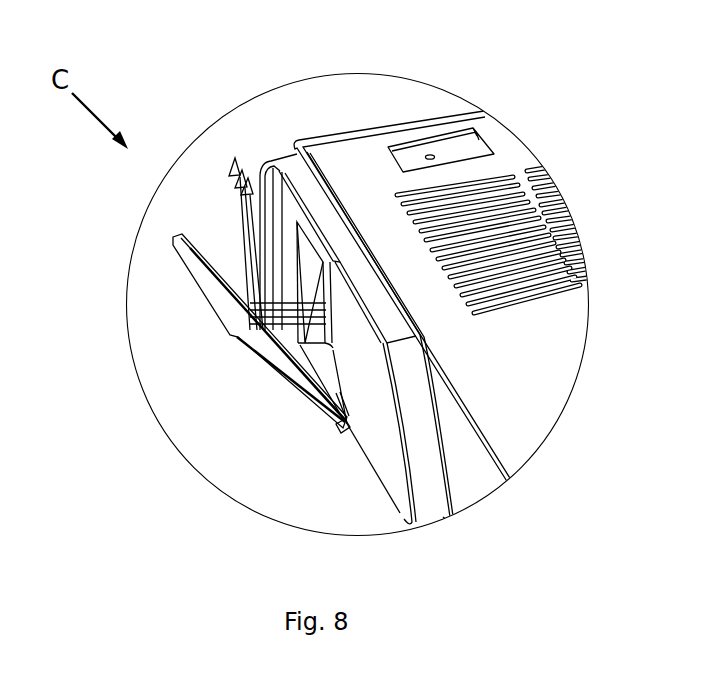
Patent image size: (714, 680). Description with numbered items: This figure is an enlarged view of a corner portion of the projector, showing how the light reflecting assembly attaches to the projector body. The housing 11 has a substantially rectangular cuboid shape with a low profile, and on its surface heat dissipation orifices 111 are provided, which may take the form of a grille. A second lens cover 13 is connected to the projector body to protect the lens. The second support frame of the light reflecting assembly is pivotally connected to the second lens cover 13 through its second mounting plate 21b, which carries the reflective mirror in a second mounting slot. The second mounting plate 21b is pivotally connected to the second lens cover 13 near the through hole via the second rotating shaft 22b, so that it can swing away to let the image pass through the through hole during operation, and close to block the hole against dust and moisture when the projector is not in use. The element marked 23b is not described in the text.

The housing 11 is at (426, 268).
The heat dissipation orifices 111 is at (478, 218).
The second lens cover 13 is at (380, 448).
The second mounting plate 21b is at (250, 350).
The second rotating shaft 22b is at (342, 423).
The strip 23b is at (238, 306).